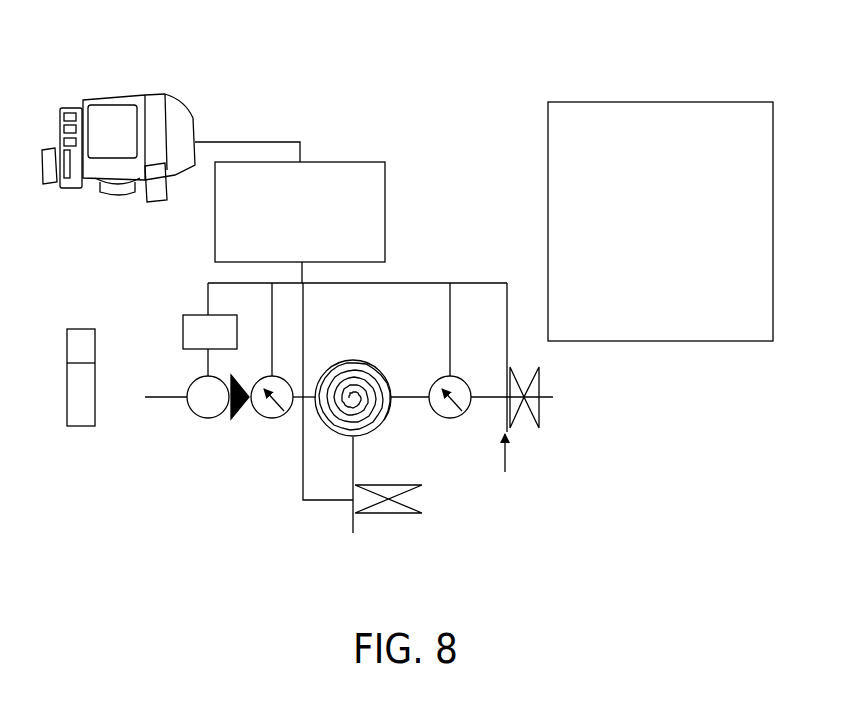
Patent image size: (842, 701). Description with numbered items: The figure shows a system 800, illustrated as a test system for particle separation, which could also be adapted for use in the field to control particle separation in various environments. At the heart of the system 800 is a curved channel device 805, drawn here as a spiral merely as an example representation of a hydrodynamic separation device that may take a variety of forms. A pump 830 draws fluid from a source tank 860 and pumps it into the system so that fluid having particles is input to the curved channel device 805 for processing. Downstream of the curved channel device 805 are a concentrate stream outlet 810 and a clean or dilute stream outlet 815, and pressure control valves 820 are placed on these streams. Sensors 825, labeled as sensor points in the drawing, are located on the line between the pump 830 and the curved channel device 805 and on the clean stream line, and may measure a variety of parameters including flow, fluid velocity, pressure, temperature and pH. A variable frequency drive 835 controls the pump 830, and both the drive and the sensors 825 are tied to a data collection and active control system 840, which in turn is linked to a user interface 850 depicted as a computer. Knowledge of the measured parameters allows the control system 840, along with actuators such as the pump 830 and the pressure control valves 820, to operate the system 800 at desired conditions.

The system 800 is at (538, 58).
The curved channel device 805 is at (364, 360).
The concentrate stream outlet 810 is at (355, 470).
The clean or dilute stream outlet 815 is at (408, 395).
The pressure control valves 820 is at (514, 420).
The sensors 825 is at (278, 419).
The pump 830 is at (207, 420).
The variable frequency drive 835 is at (183, 332).
The data collection and active control system 840 is at (386, 212).
The user interface 850 is at (193, 122).
The source tank 860 is at (97, 380).